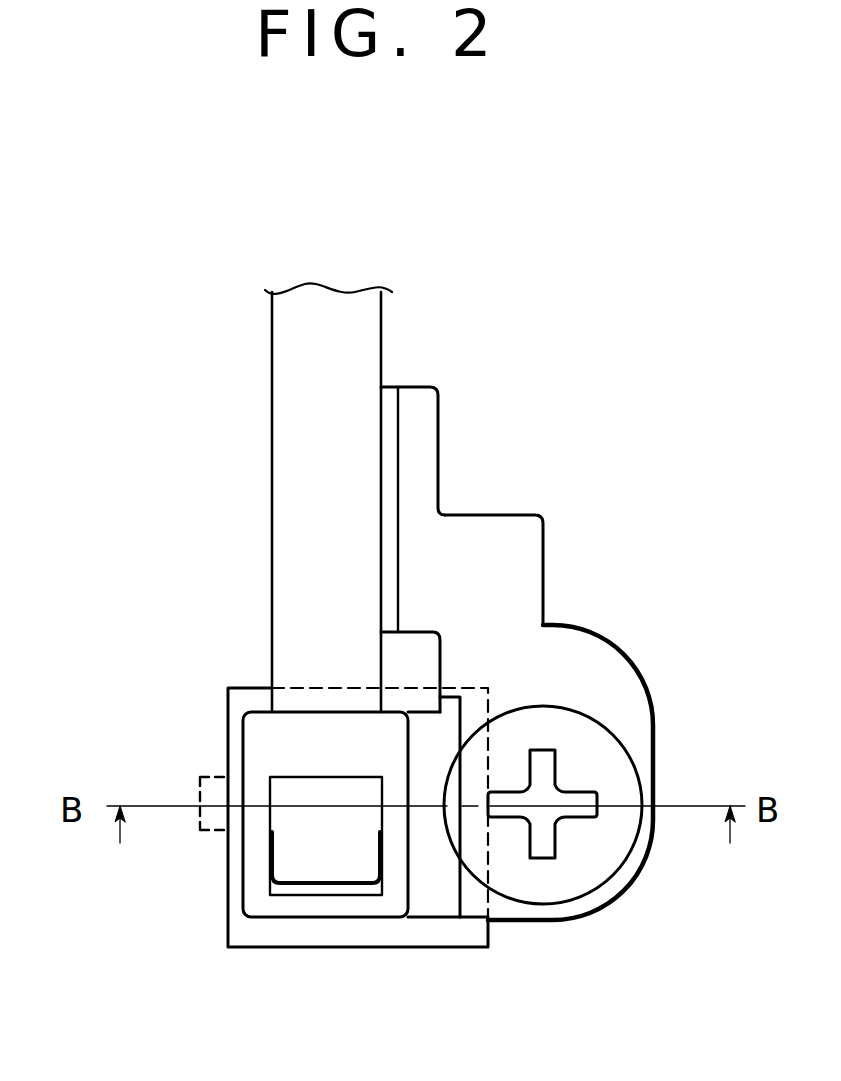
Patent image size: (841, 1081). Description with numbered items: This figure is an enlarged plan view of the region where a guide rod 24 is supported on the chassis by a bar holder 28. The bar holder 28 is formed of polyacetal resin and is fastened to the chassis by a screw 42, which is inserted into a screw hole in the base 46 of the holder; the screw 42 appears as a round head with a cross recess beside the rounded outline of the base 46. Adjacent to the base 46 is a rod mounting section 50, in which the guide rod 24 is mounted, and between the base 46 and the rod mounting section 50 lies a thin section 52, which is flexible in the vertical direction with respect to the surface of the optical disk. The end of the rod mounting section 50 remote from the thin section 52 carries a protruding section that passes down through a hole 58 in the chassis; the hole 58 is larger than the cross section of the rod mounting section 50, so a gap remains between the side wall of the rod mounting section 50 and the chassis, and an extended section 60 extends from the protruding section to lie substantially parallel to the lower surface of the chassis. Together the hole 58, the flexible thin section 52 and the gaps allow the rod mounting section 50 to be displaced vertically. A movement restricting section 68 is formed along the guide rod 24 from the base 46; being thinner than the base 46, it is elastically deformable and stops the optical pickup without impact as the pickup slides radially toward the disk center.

The guide rod 24 is at (302, 616).
The bar holder 28 is at (535, 513).
The screw 42 is at (608, 775).
The base 46 is at (577, 665).
The rod mounting section 50 is at (268, 752).
The thin section 52 is at (440, 900).
The hole 58 is at (316, 932).
The extended section 60 is at (206, 828).
The movement restricting section 68 is at (417, 438).